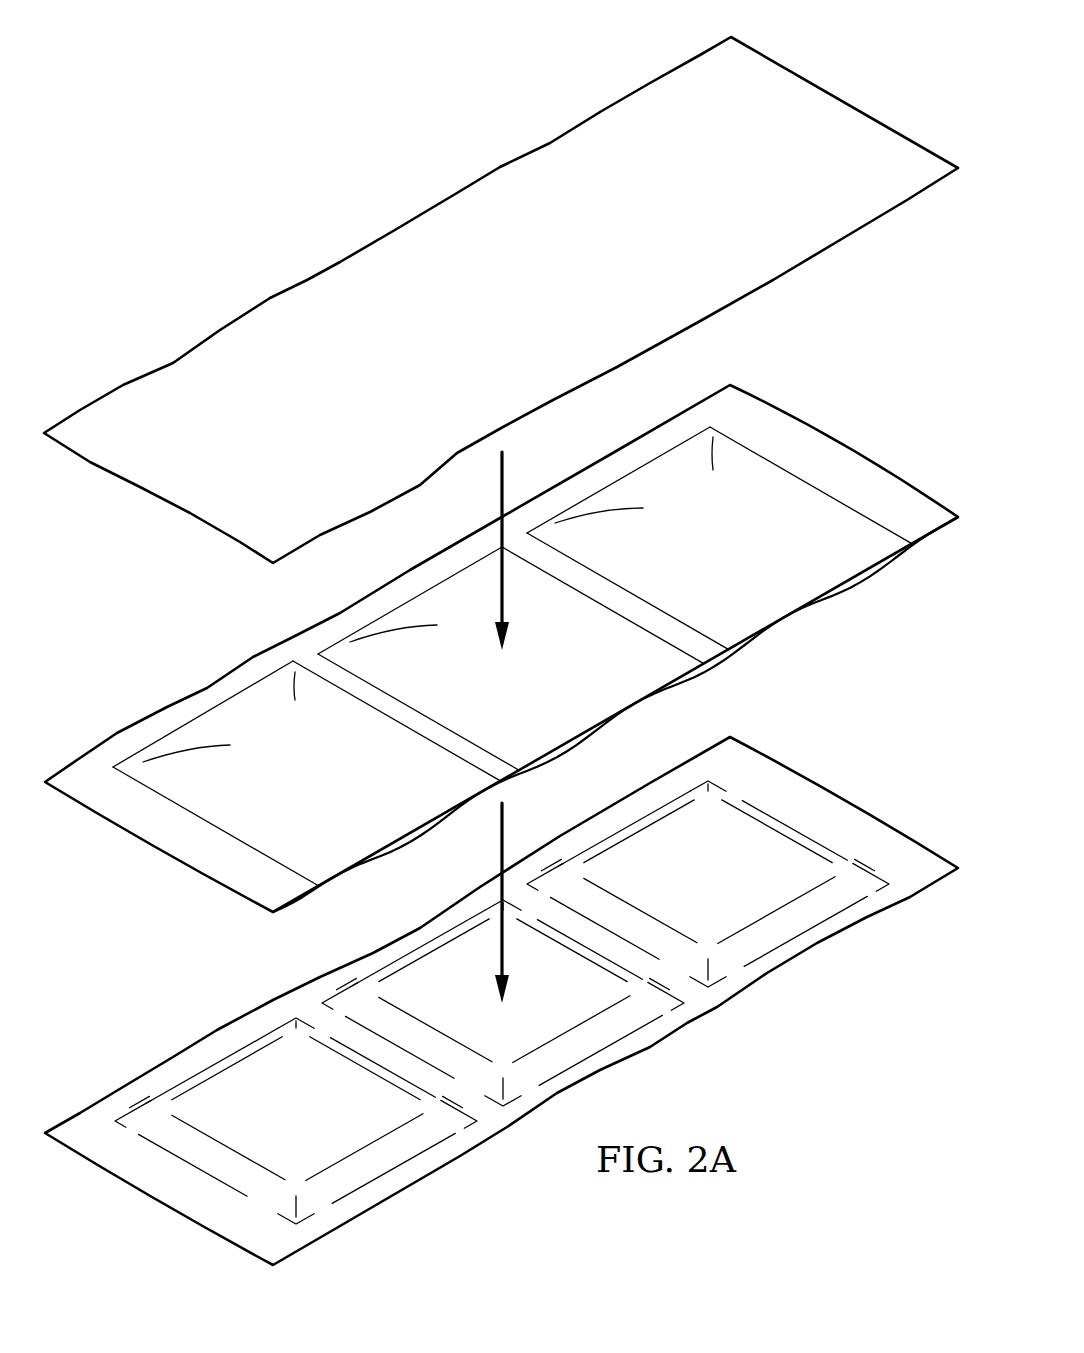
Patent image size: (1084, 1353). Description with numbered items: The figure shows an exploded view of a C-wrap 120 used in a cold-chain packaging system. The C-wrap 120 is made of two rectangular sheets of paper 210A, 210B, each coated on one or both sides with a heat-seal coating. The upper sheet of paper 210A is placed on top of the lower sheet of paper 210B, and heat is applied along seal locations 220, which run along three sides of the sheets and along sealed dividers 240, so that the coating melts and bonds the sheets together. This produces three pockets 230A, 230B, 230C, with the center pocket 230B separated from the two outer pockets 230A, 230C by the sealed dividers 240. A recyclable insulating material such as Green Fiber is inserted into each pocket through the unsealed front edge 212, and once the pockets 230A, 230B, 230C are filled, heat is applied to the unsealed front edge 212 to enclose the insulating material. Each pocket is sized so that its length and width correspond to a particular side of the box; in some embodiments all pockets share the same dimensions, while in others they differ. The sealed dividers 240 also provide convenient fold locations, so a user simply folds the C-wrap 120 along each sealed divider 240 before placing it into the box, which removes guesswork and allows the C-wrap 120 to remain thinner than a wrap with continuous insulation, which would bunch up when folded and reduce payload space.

The sheet of paper 210A is at (418, 214).
The sheet of paper 210B is at (255, 657).
The unsealed front edge 212 is at (807, 628).
The seal locations 220 is at (833, 470).
The C-wrap 120 is at (280, 990).
The pocket 230A is at (213, 1097).
The pocket 230B is at (560, 973).
The pocket 230C is at (782, 853).
The sealed dividers 240 is at (670, 978).